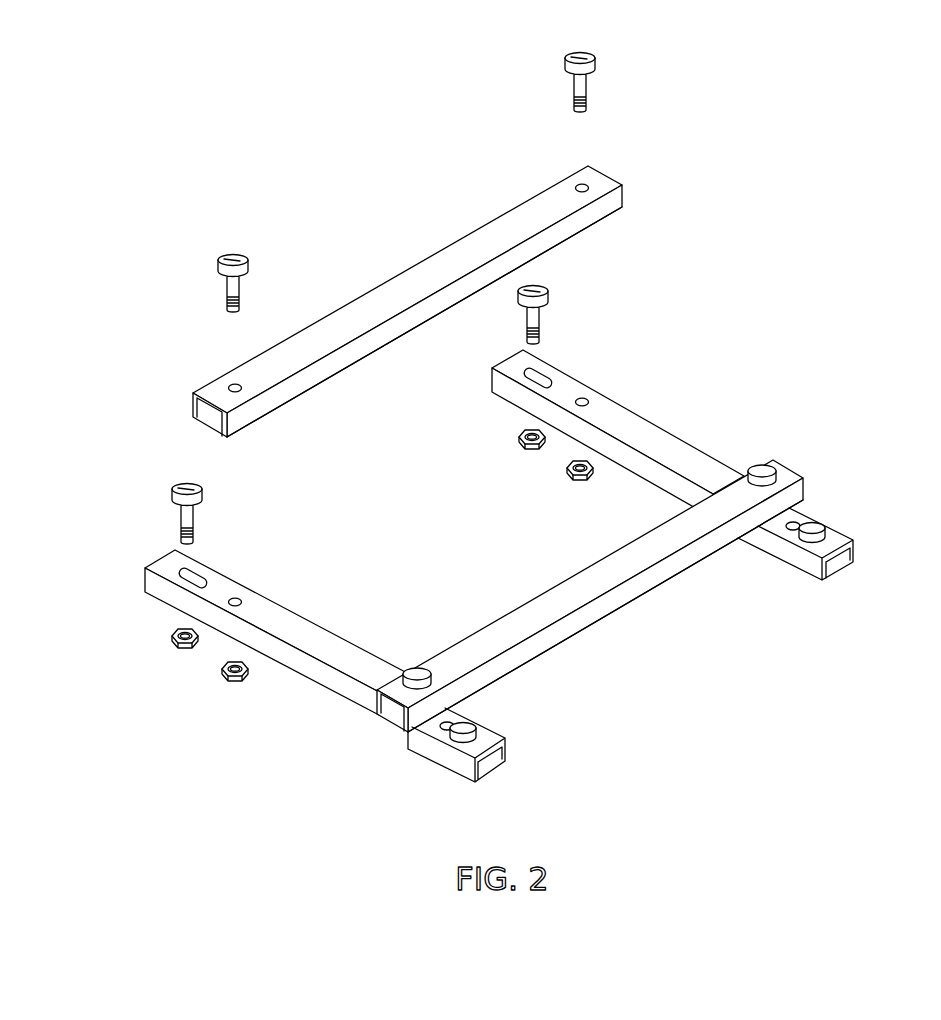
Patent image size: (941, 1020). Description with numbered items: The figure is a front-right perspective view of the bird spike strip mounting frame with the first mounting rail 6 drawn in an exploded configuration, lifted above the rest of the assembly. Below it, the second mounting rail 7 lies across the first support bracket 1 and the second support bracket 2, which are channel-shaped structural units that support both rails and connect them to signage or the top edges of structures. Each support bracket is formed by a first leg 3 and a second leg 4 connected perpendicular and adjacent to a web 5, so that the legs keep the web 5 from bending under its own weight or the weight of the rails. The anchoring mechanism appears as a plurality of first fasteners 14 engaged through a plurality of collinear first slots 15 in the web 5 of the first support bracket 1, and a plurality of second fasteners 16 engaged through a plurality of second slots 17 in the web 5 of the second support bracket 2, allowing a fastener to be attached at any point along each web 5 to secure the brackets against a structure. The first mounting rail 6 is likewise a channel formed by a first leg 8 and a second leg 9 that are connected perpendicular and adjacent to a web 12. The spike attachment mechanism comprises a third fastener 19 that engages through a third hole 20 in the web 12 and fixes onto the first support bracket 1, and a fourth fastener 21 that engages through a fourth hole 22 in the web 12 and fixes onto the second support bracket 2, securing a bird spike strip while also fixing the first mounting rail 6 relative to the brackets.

The first support bracket 1 is at (295, 693).
The second support bracket 2 is at (645, 497).
The first leg 3 is at (795, 555).
The second leg 4 is at (845, 552).
The web 5 is at (652, 438).
The first mounting rail 6 is at (407, 301).
The second mounting rail 7 is at (530, 587).
The first leg 8 is at (400, 330).
The second leg 9 is at (200, 407).
The web 12 is at (370, 313).
The first fasteners 14 is at (198, 485).
The first slots 15 is at (188, 575).
The second fasteners 16 is at (533, 380).
The second slots 17 is at (542, 290).
The third fastener 19 is at (227, 258).
The third hole 20 is at (195, 400).
The fourth fastener 21 is at (583, 63).
The fourth hole 22 is at (583, 187).